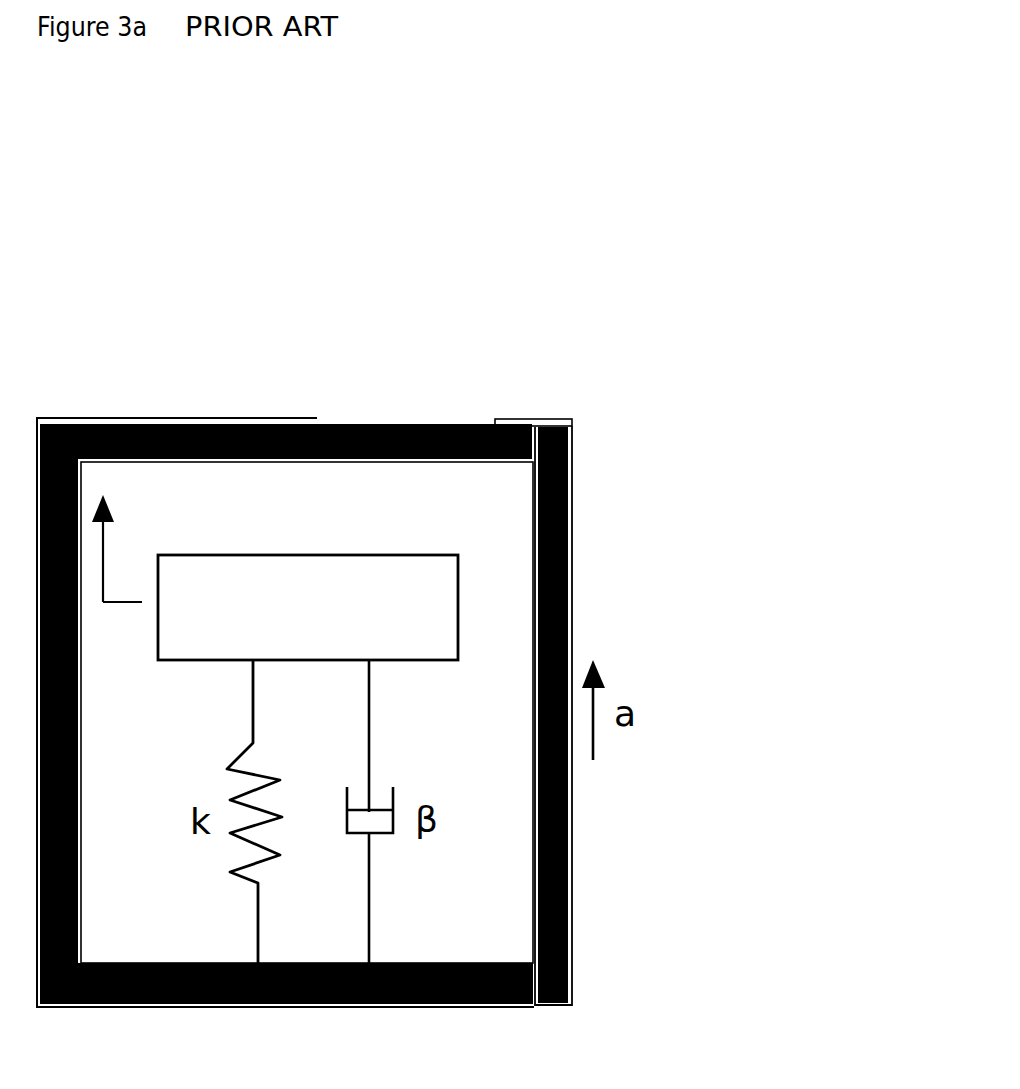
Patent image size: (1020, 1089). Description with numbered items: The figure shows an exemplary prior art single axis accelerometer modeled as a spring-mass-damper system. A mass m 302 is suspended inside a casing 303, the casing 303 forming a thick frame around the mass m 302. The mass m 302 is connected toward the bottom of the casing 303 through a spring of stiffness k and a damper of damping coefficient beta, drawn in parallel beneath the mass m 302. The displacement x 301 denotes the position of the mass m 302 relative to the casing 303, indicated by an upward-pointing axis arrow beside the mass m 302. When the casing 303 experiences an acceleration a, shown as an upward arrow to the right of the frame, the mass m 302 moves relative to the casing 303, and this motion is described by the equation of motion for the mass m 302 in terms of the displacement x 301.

The displacement x 301 is at (235, 462).
The mass m 302 is at (476, 481).
The casing 303 is at (471, 709).